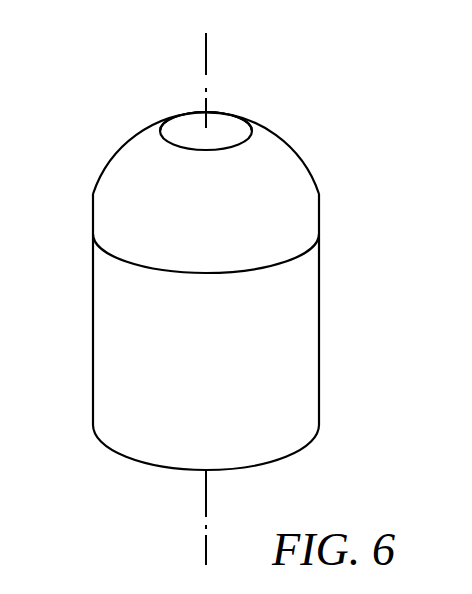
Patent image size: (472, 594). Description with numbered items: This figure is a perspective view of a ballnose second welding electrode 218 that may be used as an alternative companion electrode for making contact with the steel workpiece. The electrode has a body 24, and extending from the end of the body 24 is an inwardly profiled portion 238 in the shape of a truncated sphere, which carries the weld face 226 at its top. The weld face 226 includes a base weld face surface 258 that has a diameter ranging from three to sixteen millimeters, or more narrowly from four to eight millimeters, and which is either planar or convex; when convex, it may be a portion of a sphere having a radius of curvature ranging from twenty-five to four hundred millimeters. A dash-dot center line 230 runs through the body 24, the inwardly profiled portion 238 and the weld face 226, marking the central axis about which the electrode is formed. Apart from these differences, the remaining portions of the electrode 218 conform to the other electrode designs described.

The body 24 is at (219, 291).
The second welding electrode 218 is at (321, 278).
The weld face 226 is at (188, 122).
The longitudinal axis 230 is at (207, 72).
The inwardly profiled portion 238 is at (298, 200).
The base weld face surface 258 is at (231, 125).